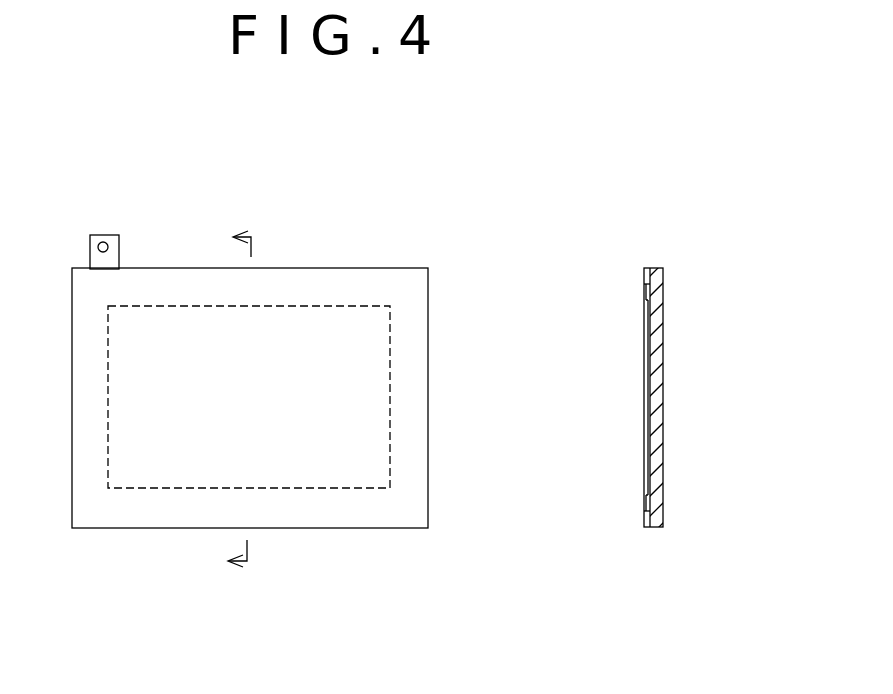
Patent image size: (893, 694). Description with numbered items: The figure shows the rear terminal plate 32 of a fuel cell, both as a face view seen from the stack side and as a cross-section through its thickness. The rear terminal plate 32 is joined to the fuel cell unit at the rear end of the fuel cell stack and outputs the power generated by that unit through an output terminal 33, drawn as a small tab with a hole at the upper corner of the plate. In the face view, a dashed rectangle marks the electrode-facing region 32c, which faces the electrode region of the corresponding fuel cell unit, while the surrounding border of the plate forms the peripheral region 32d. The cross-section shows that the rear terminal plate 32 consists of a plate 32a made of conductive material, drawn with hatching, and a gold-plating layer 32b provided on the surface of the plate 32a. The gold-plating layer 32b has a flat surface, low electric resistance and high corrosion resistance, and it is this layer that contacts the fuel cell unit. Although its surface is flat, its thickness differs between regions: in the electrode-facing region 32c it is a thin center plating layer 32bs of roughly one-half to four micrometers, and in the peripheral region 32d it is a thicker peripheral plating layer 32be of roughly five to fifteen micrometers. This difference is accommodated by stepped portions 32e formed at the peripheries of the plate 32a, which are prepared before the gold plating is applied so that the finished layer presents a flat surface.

The rear terminal plate 32 is at (162, 282).
The plate 32a is at (658, 357).
The gold-plating layer 32b is at (578, 396).
The center plating layer 32bs is at (565, 292).
The peripheral plating layer 32be is at (645, 300).
The electrode-facing region 32c is at (353, 305).
The peripheral region 32d is at (420, 284).
The stepped portion 32e is at (644, 272).
The output terminal 33 is at (110, 235).